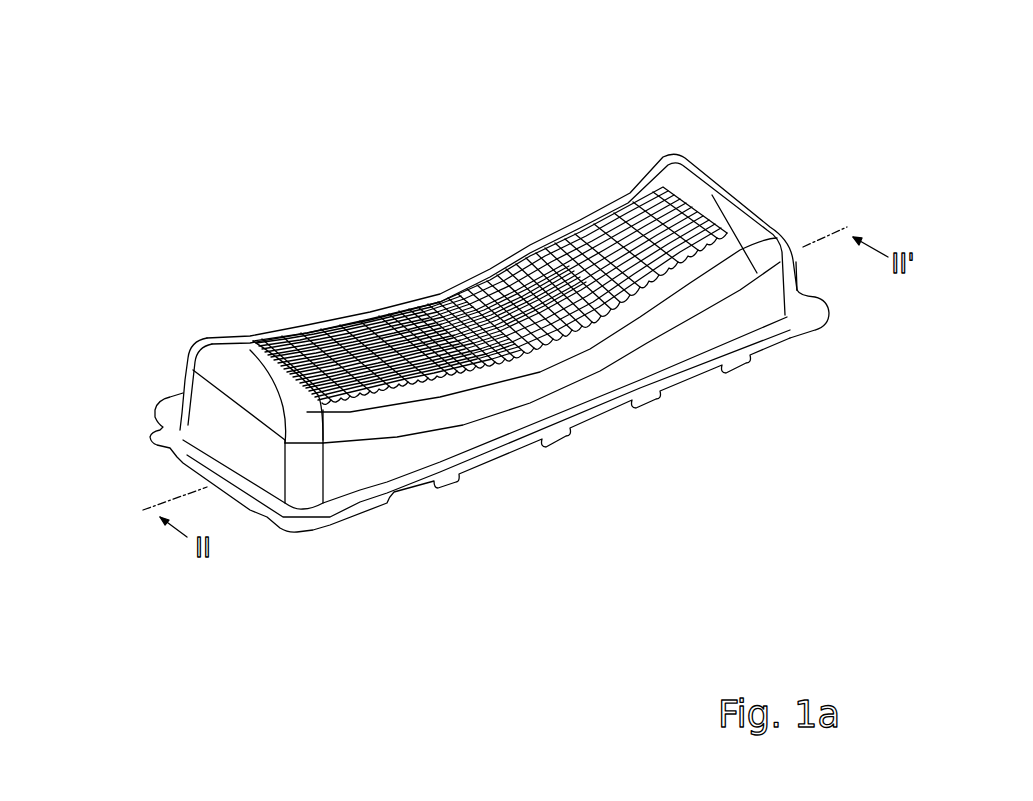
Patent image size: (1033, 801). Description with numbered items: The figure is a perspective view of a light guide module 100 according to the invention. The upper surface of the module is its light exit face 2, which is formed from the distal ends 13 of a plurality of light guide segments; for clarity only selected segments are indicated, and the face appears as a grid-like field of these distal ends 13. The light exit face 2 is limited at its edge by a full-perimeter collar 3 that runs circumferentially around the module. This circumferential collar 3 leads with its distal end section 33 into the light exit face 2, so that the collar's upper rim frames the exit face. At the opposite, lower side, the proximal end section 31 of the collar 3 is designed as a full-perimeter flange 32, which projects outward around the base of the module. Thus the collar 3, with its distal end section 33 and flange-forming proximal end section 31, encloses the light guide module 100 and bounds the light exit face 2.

The light guide module 100 is at (485, 277).
The light exit face 2 is at (490, 234).
The distal ends 13 is at (550, 230).
The full-perimeter collar 3 is at (485, 277).
The proximal end section 31 is at (173, 455).
The full-perimeter flange 32 is at (180, 463).
The distal end section 33 is at (719, 192).